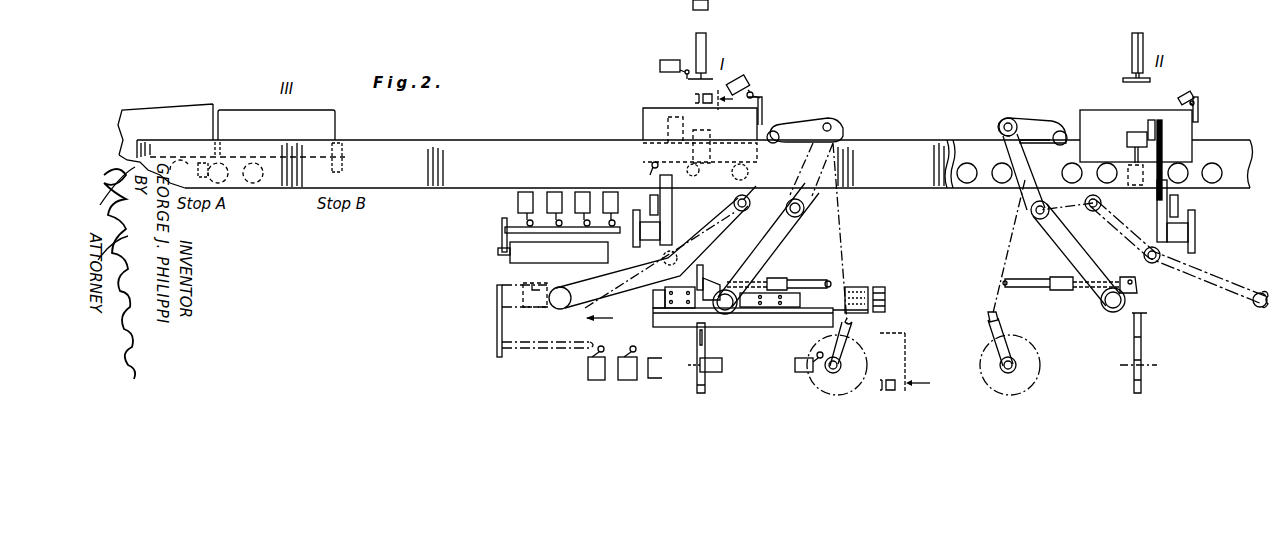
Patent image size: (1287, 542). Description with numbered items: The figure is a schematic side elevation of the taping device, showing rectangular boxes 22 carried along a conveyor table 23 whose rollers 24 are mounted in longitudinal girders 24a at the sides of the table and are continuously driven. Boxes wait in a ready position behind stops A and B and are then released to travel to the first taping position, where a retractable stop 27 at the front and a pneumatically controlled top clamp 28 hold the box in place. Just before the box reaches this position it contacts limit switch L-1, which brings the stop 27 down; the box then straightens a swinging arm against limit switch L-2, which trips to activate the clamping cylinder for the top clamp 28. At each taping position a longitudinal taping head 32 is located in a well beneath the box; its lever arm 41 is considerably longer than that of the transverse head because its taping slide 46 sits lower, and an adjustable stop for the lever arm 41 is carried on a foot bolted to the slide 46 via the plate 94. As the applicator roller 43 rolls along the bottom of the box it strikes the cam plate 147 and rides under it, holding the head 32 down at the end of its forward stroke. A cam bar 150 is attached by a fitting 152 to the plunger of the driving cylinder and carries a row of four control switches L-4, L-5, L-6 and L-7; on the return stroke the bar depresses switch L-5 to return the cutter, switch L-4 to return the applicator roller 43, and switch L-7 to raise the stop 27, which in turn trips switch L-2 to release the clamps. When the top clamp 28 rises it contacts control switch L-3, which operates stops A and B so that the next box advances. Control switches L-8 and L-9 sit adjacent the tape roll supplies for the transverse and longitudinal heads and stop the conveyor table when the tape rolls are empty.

The box 22 is at (159, 115).
The conveyor table 23 is at (510, 154).
The rollers 24 is at (1218, 166).
The longitudinal girders 24a is at (912, 172).
The retractable stop 27 is at (764, 109).
The top clamp 28 is at (712, 52).
The longitudinal taping head 32 is at (834, 116).
The lever arm 41 is at (791, 238).
The applicator roller 43 is at (771, 137).
The taping slide 46 is at (634, 245).
The plate 94 is at (771, 309).
The cam plate 147 is at (713, 163).
The cam bar 150 is at (546, 234).
The fitting 152 is at (502, 241).
The limit switch L-1 is at (652, 166).
The limit switch L-2 is at (745, 78).
The control switch L-3 is at (668, 60).
The control switch L-4 is at (583, 192).
The control switch L-5 is at (555, 192).
The control switch L-6 is at (526, 192).
The control switch L-7 is at (611, 192).
The control switch L-8 is at (740, 361).
The control switch L-9 is at (795, 364).